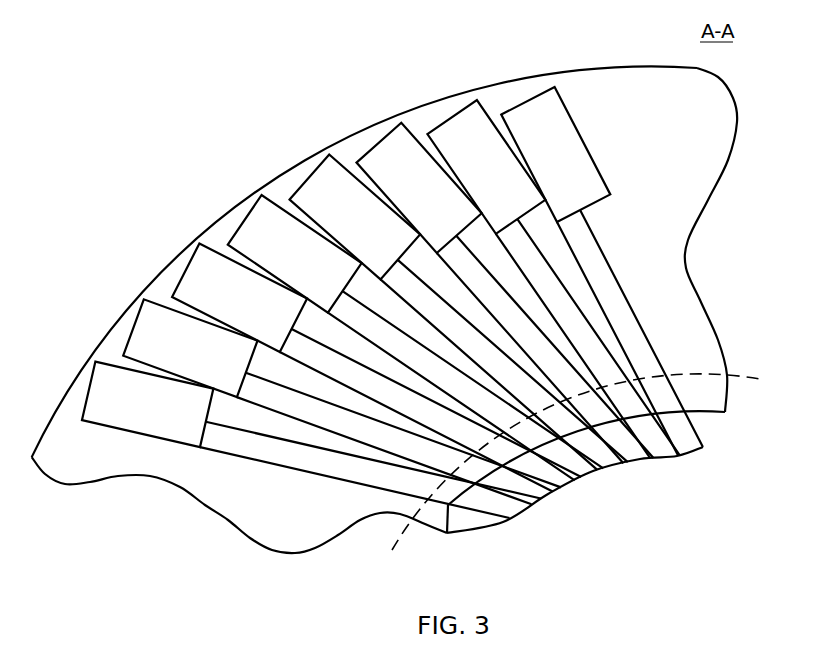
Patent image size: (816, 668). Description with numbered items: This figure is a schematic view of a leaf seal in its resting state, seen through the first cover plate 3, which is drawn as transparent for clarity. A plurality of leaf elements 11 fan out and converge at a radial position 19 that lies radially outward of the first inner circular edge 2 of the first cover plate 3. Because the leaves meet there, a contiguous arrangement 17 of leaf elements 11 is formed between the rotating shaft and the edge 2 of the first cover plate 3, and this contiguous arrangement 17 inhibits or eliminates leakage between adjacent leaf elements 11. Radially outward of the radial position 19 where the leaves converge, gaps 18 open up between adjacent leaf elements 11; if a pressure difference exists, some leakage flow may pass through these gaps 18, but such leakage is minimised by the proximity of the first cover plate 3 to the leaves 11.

The first inner circular edge 2 is at (706, 418).
The first cover plate 3 is at (670, 137).
The leaf elements 11 is at (567, 373).
The contiguous arrangement 17 is at (575, 467).
The gaps 18 is at (358, 350).
The radial position 19 is at (748, 379).